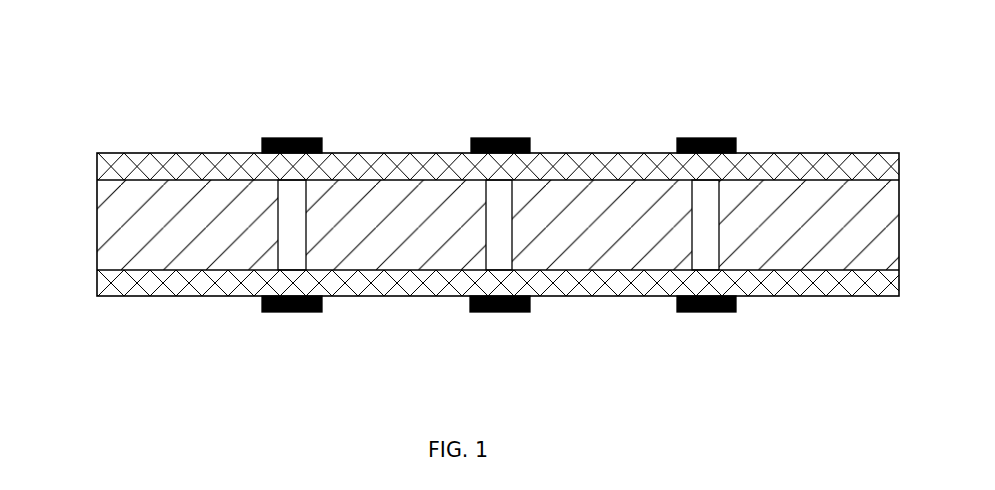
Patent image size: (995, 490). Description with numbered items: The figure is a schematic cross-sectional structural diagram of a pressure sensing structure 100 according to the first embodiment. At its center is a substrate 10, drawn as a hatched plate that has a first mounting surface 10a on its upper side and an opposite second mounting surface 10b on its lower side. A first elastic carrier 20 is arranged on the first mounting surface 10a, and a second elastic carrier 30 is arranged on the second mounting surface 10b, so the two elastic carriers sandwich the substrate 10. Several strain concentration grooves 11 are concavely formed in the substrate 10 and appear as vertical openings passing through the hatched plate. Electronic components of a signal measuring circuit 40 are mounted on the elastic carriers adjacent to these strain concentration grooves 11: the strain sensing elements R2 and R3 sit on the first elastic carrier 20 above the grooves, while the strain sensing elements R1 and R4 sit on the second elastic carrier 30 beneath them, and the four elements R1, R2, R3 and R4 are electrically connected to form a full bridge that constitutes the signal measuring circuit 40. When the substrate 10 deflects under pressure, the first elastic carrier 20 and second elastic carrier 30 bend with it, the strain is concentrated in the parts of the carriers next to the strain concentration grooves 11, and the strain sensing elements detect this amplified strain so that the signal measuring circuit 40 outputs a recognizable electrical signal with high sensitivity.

The pressure sensing structure 100 is at (523, 39).
The substrate 10 is at (230, 227).
The first mounting surface 10a is at (205, 180).
The second mounting surface 10b is at (213, 270).
The strain concentration groove 11 is at (296, 240).
The first elastic carrier 20 is at (157, 167).
The second elastic carrier 30 is at (157, 284).
The signal measuring circuit 40 is at (518, 327).
The strain sensing element R1 is at (283, 312).
The strain sensing element R2 is at (282, 138).
The strain sensing element R3 is at (492, 138).
The strain sensing element R4 is at (485, 312).